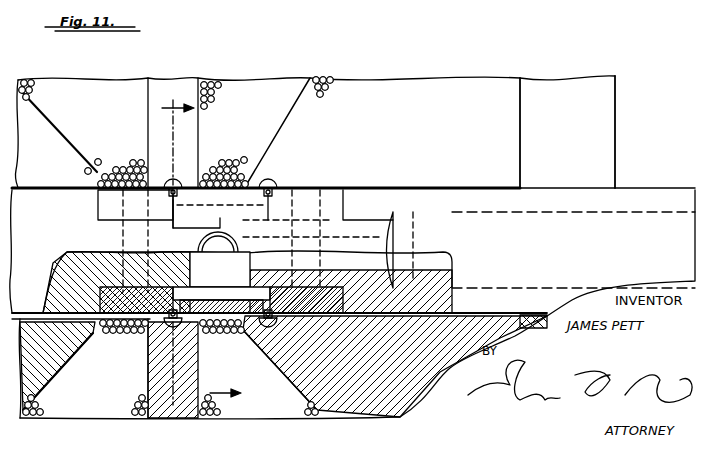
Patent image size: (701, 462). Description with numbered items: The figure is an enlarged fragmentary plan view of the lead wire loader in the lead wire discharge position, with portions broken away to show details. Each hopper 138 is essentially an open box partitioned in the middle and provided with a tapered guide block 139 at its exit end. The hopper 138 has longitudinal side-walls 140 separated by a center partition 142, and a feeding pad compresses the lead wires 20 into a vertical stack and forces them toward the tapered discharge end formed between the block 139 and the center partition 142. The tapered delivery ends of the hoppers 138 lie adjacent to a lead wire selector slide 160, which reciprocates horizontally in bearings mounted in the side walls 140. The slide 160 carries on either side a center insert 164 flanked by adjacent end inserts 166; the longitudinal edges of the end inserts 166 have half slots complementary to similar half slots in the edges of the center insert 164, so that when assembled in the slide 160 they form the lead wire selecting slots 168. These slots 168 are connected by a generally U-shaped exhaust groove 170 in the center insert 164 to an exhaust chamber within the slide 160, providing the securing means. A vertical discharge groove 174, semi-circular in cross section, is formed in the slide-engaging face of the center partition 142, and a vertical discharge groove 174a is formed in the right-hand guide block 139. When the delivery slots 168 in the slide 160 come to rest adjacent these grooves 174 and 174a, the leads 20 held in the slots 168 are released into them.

The lead wires 20 is at (100, 170).
The hopper 138 is at (302, 90).
The tapered guide block 139 is at (455, 92).
The longitudinal side-wall 140 is at (603, 108).
The center partition 142 is at (198, 90).
The lead wire selector slide 160 is at (616, 188).
The center insert 164 is at (234, 296).
The end insert 166 is at (112, 212).
The lead wire selecting slot 168 is at (188, 228).
The exhaust groove 170 is at (305, 212).
The vertical discharge groove 174 is at (180, 101).
The vertical discharge groove 174a is at (276, 188).